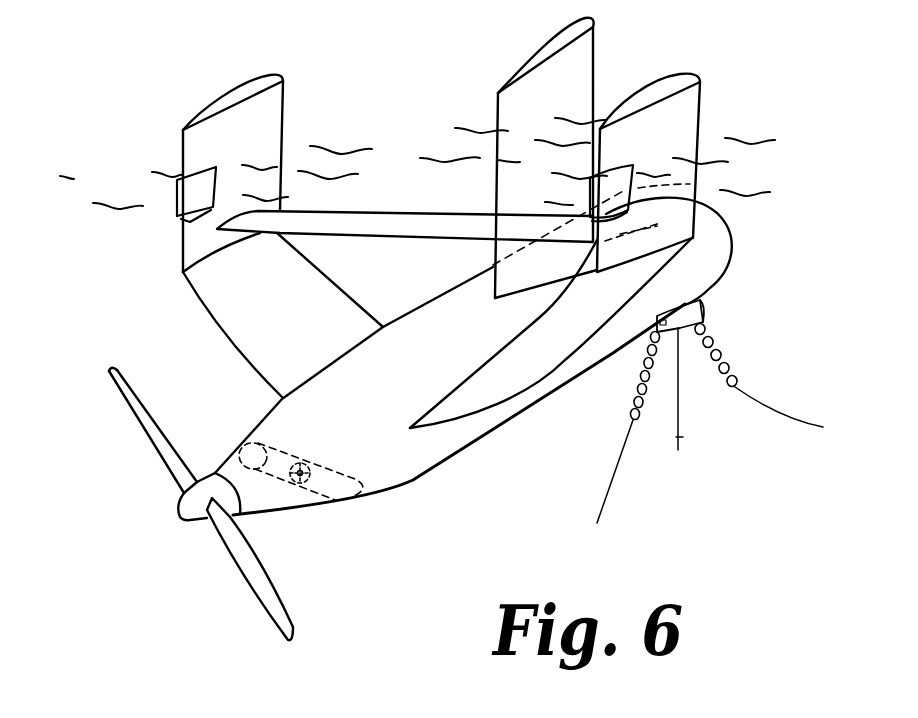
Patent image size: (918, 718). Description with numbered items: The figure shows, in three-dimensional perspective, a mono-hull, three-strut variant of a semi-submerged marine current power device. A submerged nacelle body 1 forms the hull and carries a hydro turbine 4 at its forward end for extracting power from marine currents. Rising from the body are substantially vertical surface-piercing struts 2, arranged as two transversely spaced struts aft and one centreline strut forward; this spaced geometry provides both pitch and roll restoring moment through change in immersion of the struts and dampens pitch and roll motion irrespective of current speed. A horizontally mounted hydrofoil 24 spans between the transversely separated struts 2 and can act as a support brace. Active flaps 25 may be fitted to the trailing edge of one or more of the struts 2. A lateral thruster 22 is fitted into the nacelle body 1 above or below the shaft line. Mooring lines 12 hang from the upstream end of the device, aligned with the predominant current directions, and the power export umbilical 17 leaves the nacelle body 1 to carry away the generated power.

The submerged nacelle body 1 is at (720, 257).
The vertical strut 2 is at (203, 112).
The hydro turbine 4 is at (282, 597).
The mooring lines 12 is at (608, 491).
The power export umbilical 17 is at (680, 440).
The lateral thruster 22 is at (337, 497).
The horizontally mounted hydrofoil 24 is at (433, 228).
The active flaps 25 is at (182, 195).